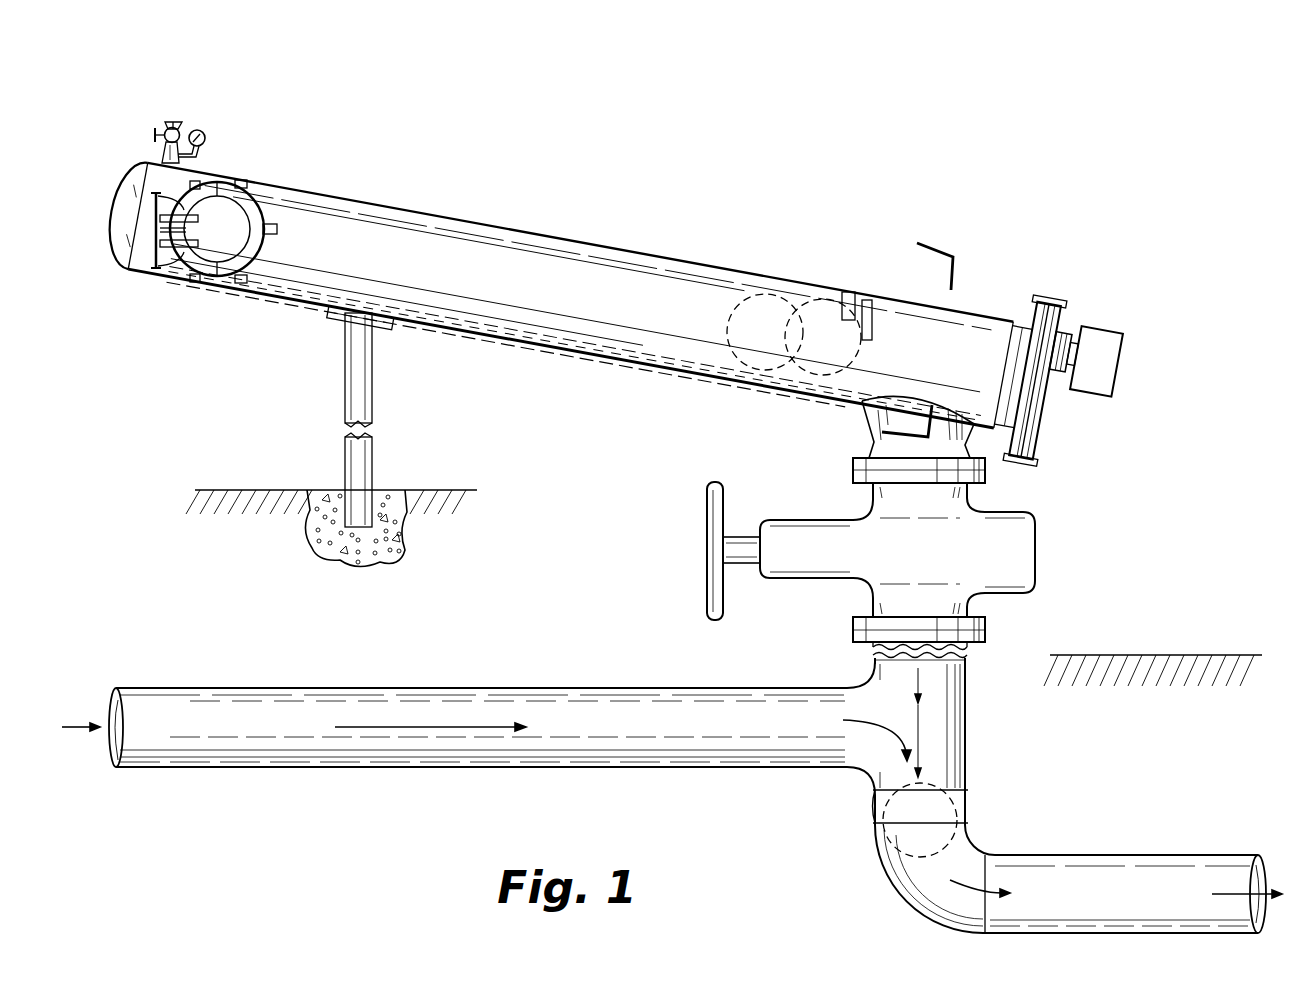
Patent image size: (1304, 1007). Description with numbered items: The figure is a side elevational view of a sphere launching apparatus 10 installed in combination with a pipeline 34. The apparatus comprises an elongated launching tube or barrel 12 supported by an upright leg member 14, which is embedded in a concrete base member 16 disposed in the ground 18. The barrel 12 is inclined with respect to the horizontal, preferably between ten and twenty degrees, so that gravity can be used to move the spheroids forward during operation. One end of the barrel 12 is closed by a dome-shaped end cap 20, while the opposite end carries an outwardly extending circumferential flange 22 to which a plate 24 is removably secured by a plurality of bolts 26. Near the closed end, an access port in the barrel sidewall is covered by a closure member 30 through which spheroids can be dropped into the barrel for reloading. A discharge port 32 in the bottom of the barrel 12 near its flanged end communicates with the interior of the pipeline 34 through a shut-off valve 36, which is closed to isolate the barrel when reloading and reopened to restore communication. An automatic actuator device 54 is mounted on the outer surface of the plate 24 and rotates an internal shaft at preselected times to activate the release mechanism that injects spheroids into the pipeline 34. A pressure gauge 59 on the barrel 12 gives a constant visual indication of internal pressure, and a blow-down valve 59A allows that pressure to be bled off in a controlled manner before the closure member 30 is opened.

The sphere launching apparatus 10 is at (515, 216).
The launching tube or barrel 12 is at (522, 326).
The upright leg member 14 is at (343, 370).
The concrete base member 16 is at (395, 490).
The ground 18 is at (220, 490).
The end cap or dome-shaped portion 20 is at (113, 208).
The circumferential flange 22 is at (1040, 302).
The plate 24 is at (1035, 425).
The bolts 26 is at (1070, 320).
The closure member 30 is at (205, 285).
The discharge port 32 is at (885, 420).
The pipeline 34 is at (778, 769).
The shut-off valve 36 is at (1020, 552).
The automatic actuator device 54 is at (1098, 348).
The pressure gauge 59 is at (212, 134).
The blow-down valve 59A is at (156, 128).